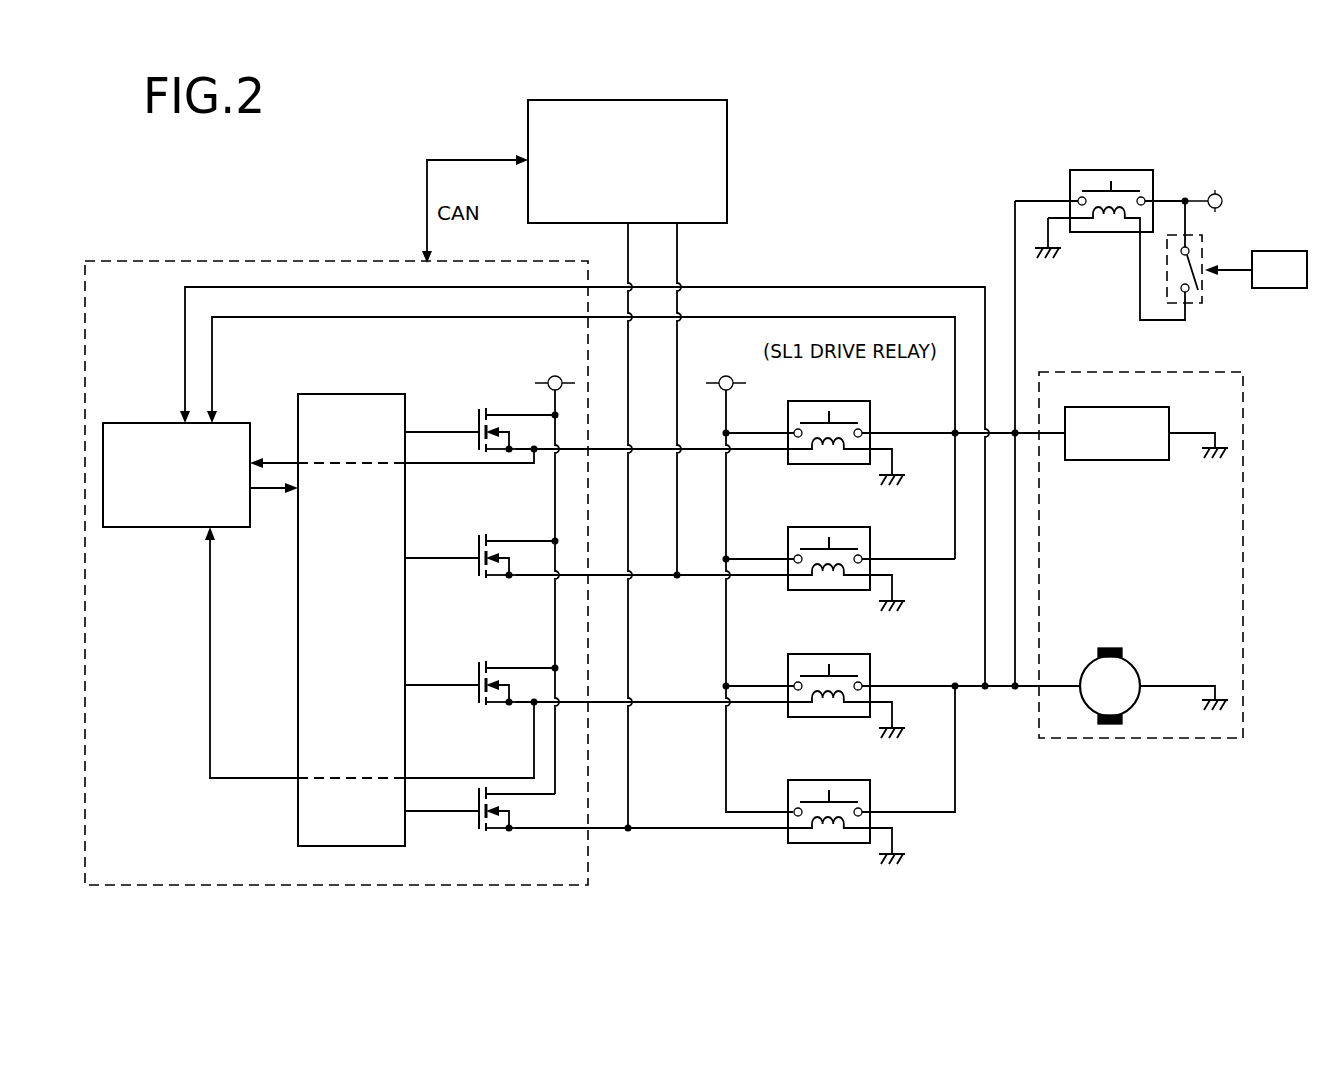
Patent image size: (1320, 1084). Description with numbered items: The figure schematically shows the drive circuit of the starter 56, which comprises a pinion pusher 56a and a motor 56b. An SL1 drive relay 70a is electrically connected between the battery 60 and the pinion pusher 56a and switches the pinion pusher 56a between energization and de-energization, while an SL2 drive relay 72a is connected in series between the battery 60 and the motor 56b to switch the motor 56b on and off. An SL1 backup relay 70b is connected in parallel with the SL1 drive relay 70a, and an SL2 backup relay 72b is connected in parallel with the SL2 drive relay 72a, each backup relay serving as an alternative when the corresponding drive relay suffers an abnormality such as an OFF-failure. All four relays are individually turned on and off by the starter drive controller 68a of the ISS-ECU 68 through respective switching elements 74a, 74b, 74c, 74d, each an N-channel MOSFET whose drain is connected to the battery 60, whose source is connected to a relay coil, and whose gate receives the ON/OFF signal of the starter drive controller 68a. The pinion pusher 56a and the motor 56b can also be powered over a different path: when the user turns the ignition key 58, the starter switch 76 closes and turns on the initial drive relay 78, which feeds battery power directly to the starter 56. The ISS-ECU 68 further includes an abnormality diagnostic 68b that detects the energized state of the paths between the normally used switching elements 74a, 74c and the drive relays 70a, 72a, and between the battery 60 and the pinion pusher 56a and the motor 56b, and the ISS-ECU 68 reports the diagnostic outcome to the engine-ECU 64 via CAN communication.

The starter 56 is at (1138, 740).
The pinion pusher 56a is at (1150, 460).
The motor 56b is at (1133, 664).
The ignition key 58 is at (1296, 252).
The battery 60 is at (556, 376).
The engine-ECU 64 is at (727, 160).
The ISS-ECU 68 is at (176, 262).
The starter drive controller 68a is at (298, 818).
The abnormality diagnostic 68b is at (157, 527).
The SL1 drive relay 70a is at (850, 401).
The SL1 backup relay 70b is at (850, 527).
The SL2 drive relay 72a is at (785, 654).
The SL2 backup relay 72b is at (850, 780).
The switching element 74a is at (479, 424).
The switching element 74b is at (479, 551).
The switching element 74c is at (479, 676).
The switching element 74d is at (479, 820).
The starter switch 76 is at (1204, 296).
The initial drive relay 78 is at (1133, 170).